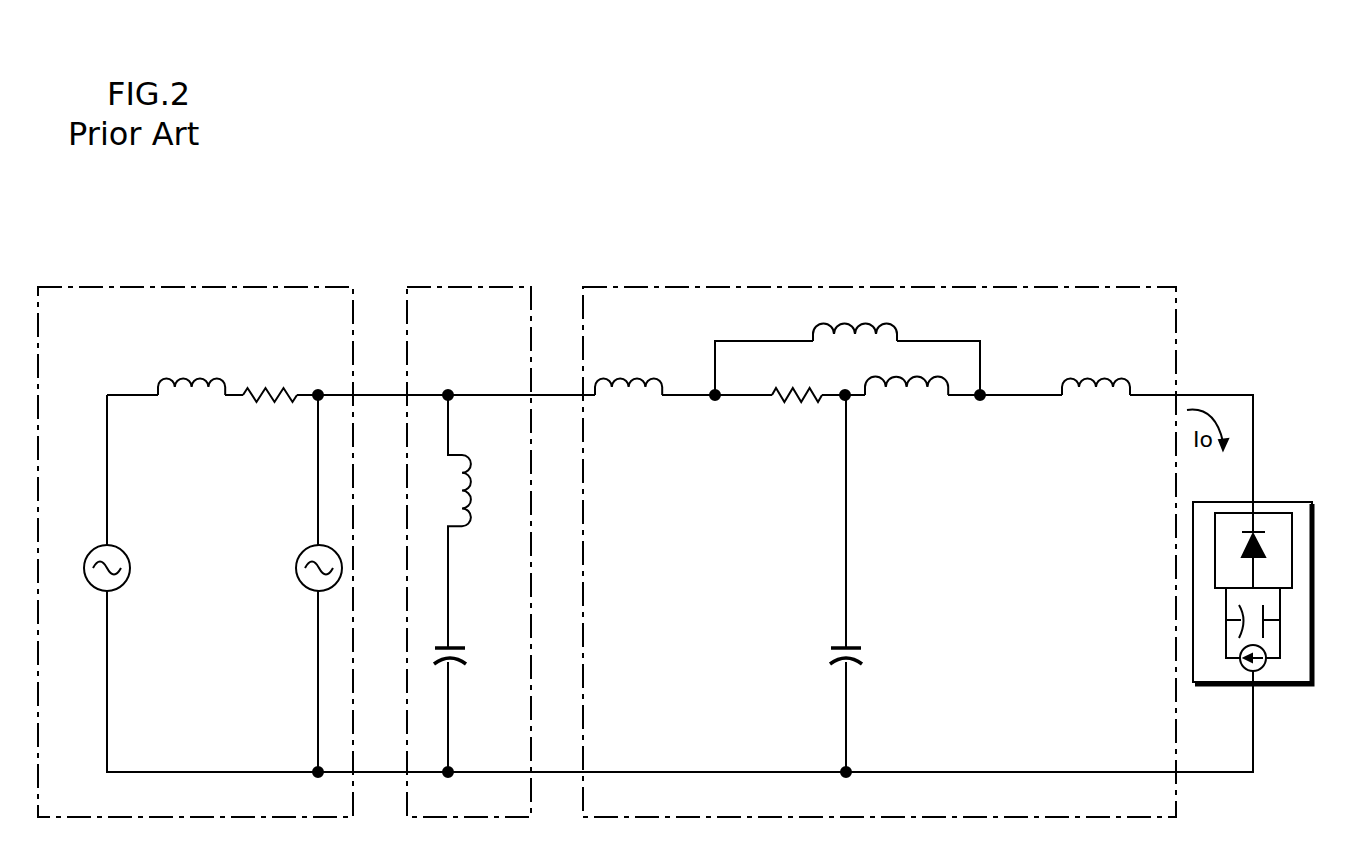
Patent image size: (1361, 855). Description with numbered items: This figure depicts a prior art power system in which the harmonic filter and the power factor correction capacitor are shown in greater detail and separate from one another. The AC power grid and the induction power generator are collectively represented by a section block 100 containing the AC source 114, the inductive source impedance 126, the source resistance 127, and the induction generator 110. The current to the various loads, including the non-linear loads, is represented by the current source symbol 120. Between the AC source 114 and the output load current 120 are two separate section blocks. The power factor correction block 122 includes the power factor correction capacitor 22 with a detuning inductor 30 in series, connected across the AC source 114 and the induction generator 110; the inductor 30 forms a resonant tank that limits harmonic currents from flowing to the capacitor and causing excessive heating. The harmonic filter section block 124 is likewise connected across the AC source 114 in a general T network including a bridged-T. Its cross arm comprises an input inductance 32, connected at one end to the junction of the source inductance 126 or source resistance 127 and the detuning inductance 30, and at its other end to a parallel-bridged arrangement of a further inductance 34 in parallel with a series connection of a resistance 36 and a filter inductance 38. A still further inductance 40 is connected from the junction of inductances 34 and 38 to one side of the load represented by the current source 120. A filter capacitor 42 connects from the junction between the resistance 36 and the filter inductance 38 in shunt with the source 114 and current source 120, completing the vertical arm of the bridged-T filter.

The section block 100 is at (238, 289).
The power factor correction block 122 is at (490, 289).
The harmonic filter section block 124 is at (990, 289).
The inductive source impedance 126 is at (171, 376).
The source resistance 127 is at (269, 403).
The AC source 114 is at (88, 555).
The induction generator 110 is at (299, 555).
The detuning inductor 30 is at (474, 486).
The power factor correction capacitor 22 is at (458, 647).
The input inductance 32 is at (653, 373).
The further inductance 34 is at (840, 331).
The resistance 36 is at (795, 403).
The filter inductance 38 is at (916, 399).
The still further inductance 40 is at (1084, 373).
The filter capacitor 42 is at (858, 647).
The current source 120 is at (1268, 502).